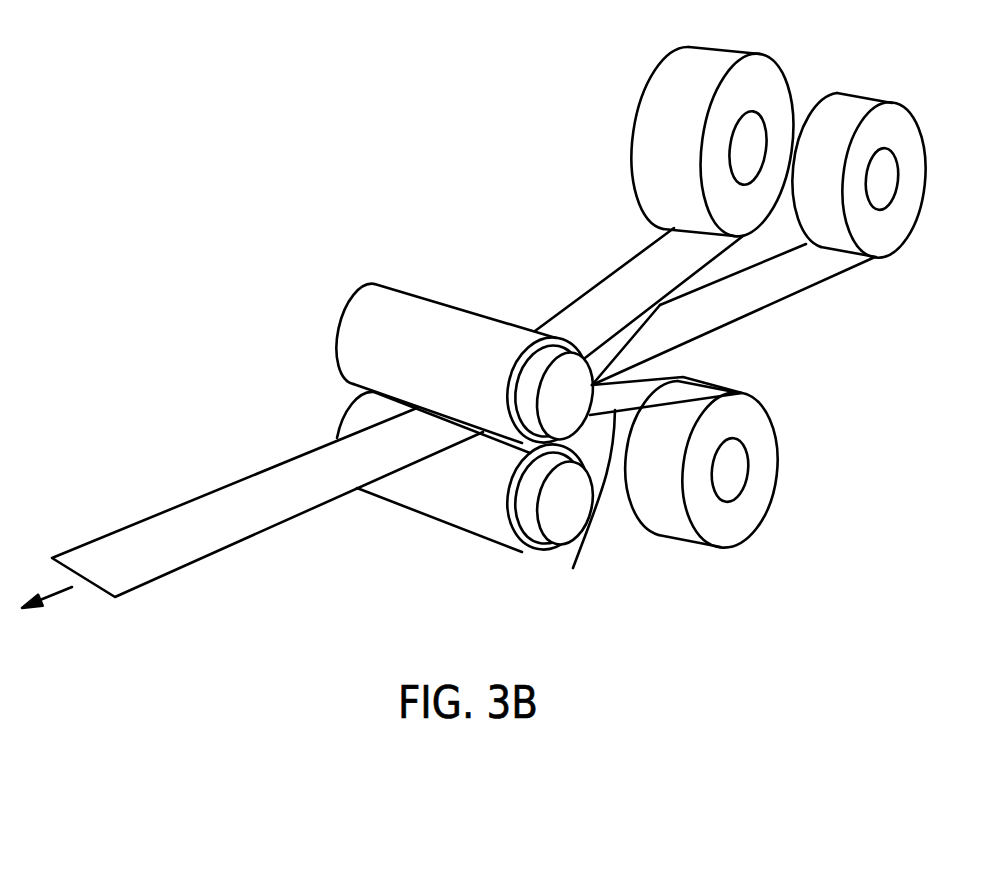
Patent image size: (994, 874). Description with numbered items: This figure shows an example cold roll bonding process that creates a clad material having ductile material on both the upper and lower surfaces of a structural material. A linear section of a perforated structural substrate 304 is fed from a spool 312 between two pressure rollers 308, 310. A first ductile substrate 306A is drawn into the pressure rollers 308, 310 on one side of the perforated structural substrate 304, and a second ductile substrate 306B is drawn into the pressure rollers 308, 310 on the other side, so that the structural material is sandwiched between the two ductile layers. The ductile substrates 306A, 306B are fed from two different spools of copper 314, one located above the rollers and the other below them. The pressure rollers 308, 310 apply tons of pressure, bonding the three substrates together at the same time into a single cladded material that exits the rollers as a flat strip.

The belt 304 is at (750, 295).
The first belt 306A is at (610, 287).
The second belt 306B is at (584, 505).
The upper roller 308 is at (420, 315).
The lower roller 310 is at (460, 503).
The spool 312 is at (855, 183).
The spools 314 is at (652, 93).